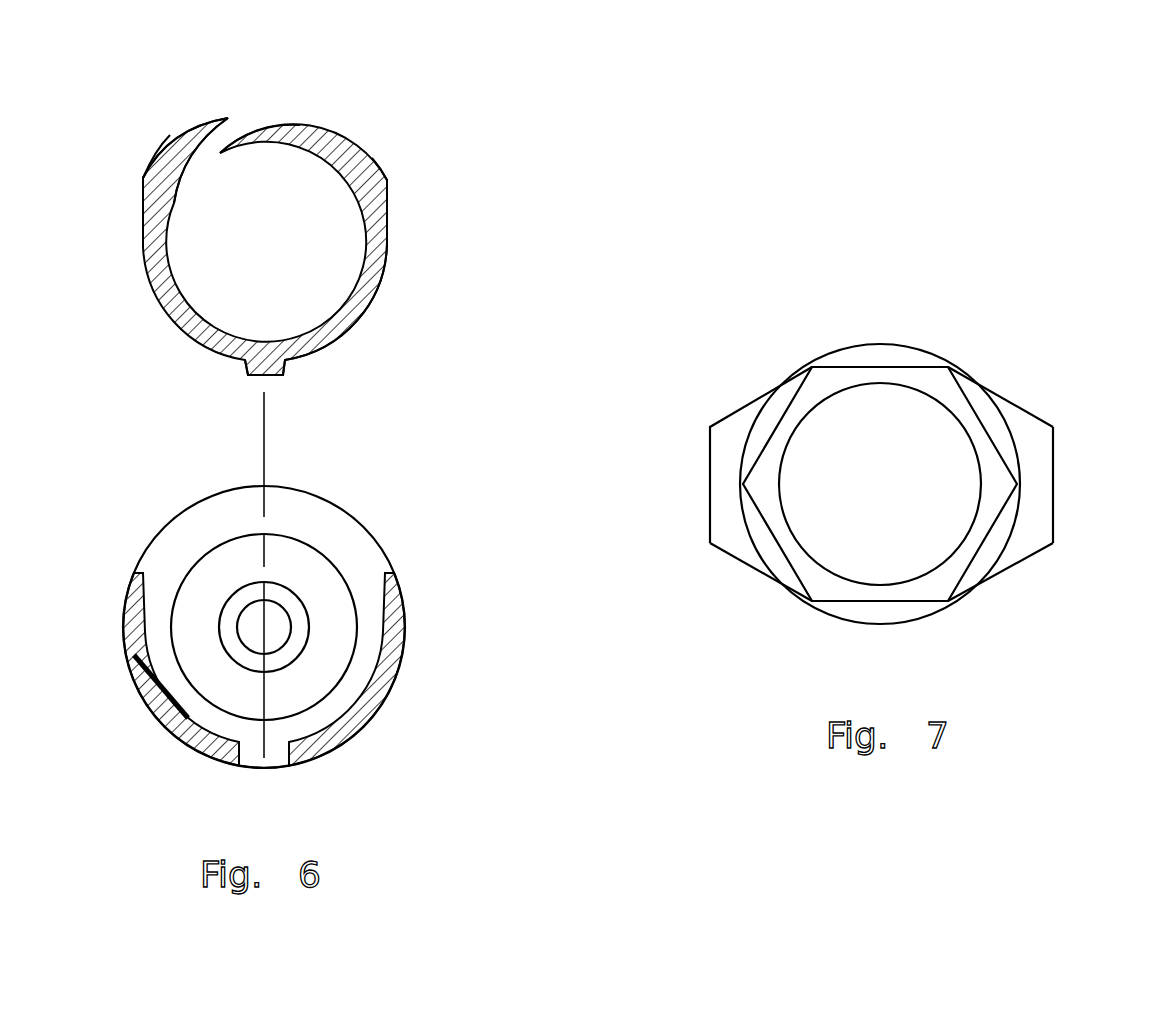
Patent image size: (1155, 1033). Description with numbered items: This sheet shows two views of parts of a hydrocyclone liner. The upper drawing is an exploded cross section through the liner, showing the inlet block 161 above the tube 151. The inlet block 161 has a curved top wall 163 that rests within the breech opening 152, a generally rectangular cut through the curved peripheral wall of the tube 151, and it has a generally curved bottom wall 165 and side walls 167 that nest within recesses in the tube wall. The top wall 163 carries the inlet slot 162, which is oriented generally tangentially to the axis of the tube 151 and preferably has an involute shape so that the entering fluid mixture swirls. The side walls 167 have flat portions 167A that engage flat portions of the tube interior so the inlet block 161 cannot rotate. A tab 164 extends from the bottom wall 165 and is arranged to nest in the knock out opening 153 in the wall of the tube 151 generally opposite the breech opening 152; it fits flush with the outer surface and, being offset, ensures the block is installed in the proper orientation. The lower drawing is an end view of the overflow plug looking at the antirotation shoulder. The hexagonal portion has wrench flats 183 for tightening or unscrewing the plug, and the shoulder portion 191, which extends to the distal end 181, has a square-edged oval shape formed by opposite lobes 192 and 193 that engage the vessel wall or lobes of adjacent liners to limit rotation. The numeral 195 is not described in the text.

In FIG. 6, the tube 151 is at (130, 677).
In FIG. 6, the breech opening 152 is at (203, 503).
In FIG. 6, the knock out opening 153 is at (280, 766).
In FIG. 6, the inlet block 161 is at (172, 315).
In FIG. 6, the inlet slot 162 is at (237, 122).
In FIG. 6, the top wall 163 is at (357, 142).
In FIG. 6, the tab 164 is at (288, 380).
In FIG. 6, the bottom wall 165 is at (330, 342).
In FIG. 6, the side walls 167 is at (377, 260).
In FIG. 6, the flat portions 167A is at (387, 210).
In FIG. 7, the distal end 181 is at (862, 372).
In FIG. 7, the wrench flats 183 is at (922, 367).
In FIG. 7, the shoulder portion 191 is at (1033, 413).
In FIG. 7, the lobe 192 is at (1032, 550).
In FIG. 7, the lobe 193 is at (710, 537).
In FIG. 7, the vertical side flats 195 is at (1055, 480).